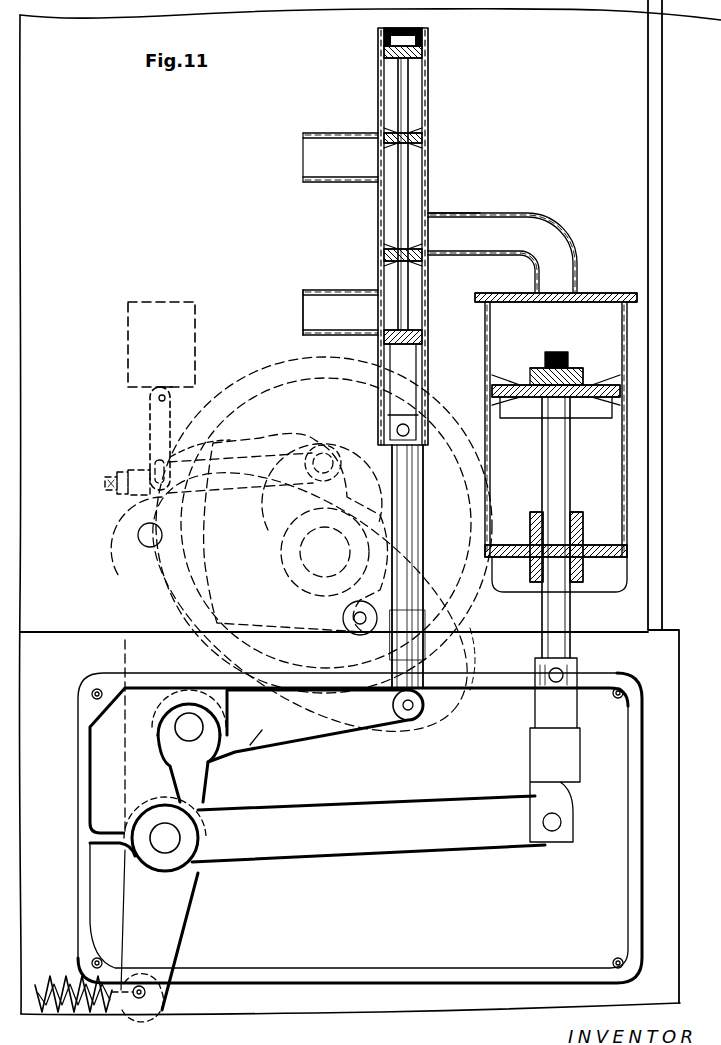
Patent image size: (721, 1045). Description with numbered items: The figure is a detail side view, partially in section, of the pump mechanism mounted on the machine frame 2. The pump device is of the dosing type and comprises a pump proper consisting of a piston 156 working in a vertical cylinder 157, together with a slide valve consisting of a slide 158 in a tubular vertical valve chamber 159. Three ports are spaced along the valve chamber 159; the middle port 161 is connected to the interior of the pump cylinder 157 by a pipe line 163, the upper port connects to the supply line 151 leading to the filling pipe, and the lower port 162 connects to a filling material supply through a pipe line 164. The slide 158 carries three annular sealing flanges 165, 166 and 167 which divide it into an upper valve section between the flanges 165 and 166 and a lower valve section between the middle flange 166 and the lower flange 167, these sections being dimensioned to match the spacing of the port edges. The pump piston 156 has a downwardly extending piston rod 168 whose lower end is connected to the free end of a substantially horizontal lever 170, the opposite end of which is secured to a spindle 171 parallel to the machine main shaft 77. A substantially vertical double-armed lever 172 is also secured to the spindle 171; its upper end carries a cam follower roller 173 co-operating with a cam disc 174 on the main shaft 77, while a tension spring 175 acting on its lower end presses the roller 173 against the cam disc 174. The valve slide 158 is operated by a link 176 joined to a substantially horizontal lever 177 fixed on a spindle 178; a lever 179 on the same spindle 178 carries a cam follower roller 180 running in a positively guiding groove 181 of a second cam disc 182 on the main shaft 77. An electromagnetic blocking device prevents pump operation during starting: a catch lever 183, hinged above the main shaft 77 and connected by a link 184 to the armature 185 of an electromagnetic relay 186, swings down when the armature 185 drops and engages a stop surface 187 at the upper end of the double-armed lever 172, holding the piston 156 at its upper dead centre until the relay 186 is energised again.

The machine frame 2 is at (655, 249).
The machine main shaft 77 is at (320, 548).
The supply line 151 is at (352, 133).
The piston 156 is at (492, 392).
The vertical cylinder 157 is at (620, 293).
The slide 158 is at (405, 86).
The vertical valve chamber 159 is at (428, 165).
The port 161 is at (430, 213).
The port 162 is at (375, 290).
The pipe line 163 is at (530, 214).
The pipe line 164 is at (308, 290).
The annular sealing flange 165 is at (428, 138).
The annular sealing flange 166 is at (426, 254).
The annular sealing flange 167 is at (428, 340).
The piston rod 168 is at (572, 628).
The lever 170 is at (410, 855).
The spindle 171 is at (190, 862).
The double-armed lever 172 is at (95, 750).
The cam follower roller 173 is at (116, 516).
The cam disc 174 is at (262, 385).
The tension spring 175 is at (64, 976).
The link 176 is at (410, 600).
The lever 177 is at (320, 725).
The spindle 178 is at (205, 762).
The lever 179 is at (250, 745).
The cam follower roller 180 is at (355, 653).
The positively guiding groove 181 is at (290, 405).
The cam disc 182 is at (470, 628).
The catch lever 183 is at (140, 472).
The link 184 is at (160, 428).
The armature 185 is at (150, 395).
The electromagnetic relay 186 is at (143, 340).
The stop surface 187 is at (170, 545).